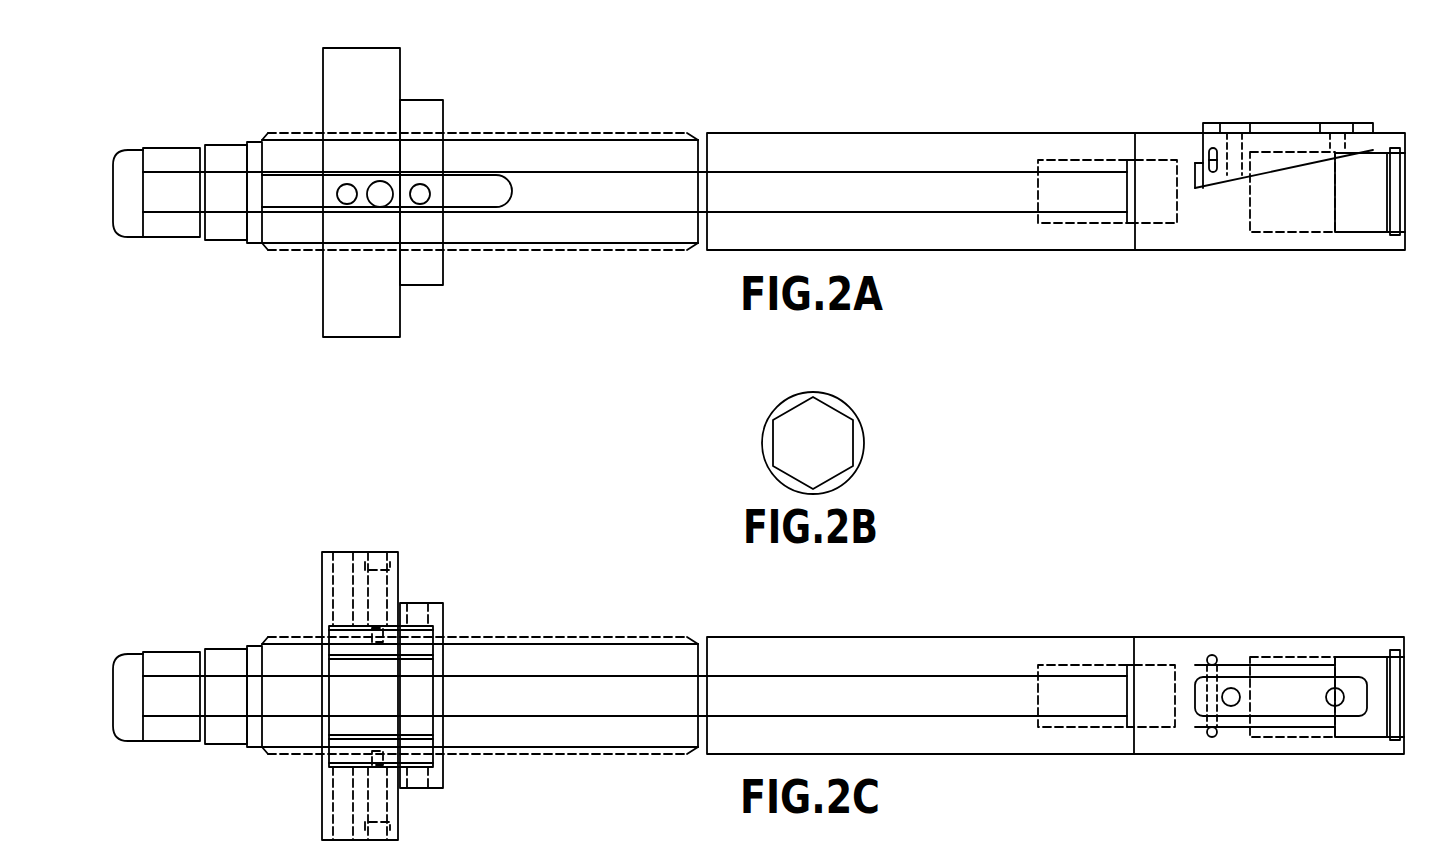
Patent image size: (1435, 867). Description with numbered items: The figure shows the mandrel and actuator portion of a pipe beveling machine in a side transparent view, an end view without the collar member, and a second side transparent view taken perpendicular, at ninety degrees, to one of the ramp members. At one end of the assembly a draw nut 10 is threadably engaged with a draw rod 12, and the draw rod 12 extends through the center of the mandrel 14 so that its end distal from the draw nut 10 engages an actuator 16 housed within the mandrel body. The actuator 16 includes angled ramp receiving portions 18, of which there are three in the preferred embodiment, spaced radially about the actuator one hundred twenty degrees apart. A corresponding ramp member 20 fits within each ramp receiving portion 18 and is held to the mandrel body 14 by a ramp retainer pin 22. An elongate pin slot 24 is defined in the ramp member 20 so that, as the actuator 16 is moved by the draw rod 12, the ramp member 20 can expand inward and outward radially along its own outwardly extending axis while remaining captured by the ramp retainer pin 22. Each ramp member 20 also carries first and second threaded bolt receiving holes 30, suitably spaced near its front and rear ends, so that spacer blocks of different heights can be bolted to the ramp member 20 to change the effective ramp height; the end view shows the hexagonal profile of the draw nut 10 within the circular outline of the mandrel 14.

The draw nut 10 is at (223, 242).
The draw rod 12 is at (957, 172).
The mandrel 14 is at (840, 133).
The actuator 16 is at (1157, 170).
The ramp receiving portion 18 is at (1277, 170).
The ramp member 20 is at (1298, 140).
The ramp retainer pin 22 is at (1212, 150).
The pin slot 24 is at (1210, 190).
The threaded bolt receiving holes 30 is at (1233, 127).